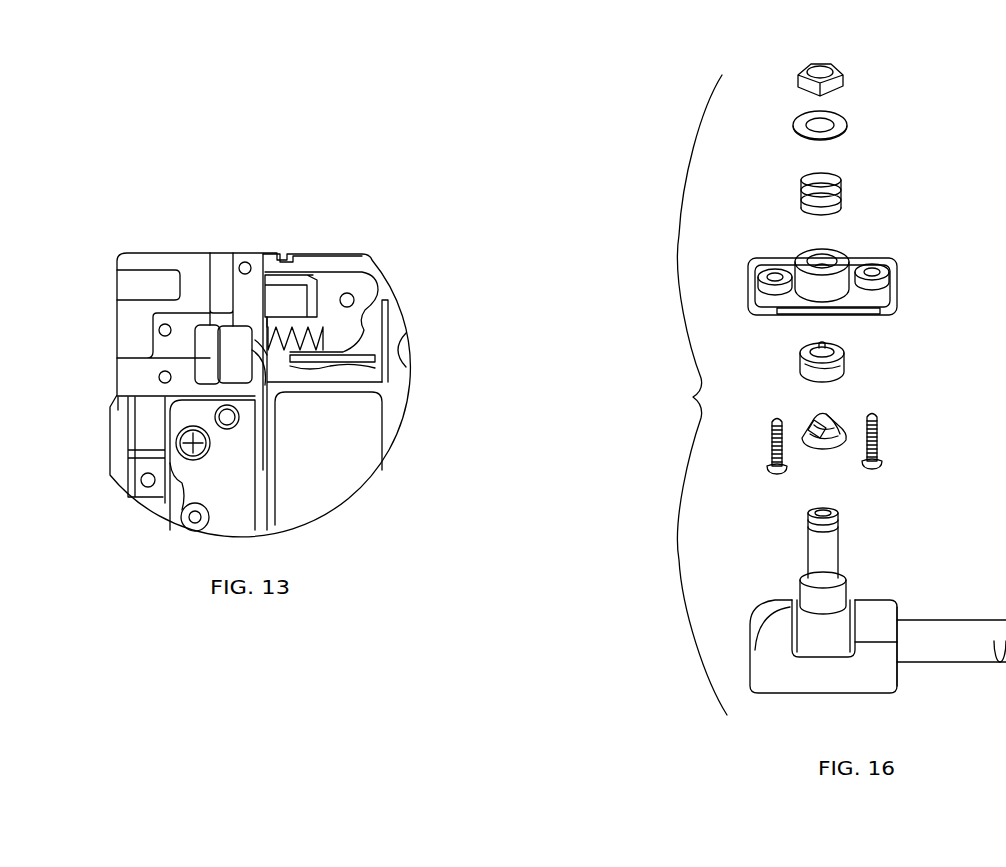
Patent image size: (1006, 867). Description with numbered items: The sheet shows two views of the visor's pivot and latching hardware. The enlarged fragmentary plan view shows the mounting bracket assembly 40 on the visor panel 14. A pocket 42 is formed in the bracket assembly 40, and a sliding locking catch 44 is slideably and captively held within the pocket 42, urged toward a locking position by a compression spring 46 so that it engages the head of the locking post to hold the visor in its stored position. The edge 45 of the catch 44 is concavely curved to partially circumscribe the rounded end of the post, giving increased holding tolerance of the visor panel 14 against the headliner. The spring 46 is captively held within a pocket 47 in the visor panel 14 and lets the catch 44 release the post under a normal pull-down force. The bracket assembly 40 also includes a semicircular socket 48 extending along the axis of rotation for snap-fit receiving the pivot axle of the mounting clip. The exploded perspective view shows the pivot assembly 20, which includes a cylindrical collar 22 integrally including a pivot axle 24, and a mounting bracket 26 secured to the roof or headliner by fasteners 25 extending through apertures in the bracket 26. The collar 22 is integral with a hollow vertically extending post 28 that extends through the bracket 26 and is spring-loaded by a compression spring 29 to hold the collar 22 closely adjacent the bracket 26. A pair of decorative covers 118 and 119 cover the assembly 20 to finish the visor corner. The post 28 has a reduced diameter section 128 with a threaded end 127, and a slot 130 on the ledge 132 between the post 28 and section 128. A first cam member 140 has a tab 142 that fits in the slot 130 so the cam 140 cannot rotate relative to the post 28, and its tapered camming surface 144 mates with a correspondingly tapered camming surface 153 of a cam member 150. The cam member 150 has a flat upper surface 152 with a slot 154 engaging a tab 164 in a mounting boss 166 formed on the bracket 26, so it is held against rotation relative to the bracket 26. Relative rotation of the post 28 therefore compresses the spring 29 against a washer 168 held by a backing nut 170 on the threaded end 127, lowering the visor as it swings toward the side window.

In FIG. 13, the mounting bracket assembly 40 is at (146, 252).
In FIG. 13, the pocket 42 is at (205, 340).
In FIG. 13, the sliding locking catch 44 is at (232, 338).
In FIG. 13, the edge of catch 45 is at (210, 358).
In FIG. 13, the compression spring 46 is at (295, 323).
In FIG. 13, the pocket 47 is at (130, 396).
In FIG. 13, the semicircular socket 48 is at (138, 297).
In FIG. 13, the visor panel 14 is at (337, 445).
In FIG. 16, the pivot assembly 20 is at (700, 395).
In FIG. 16, the cylindrical collar 22 is at (822, 640).
In FIG. 16, the pivot axle 24 is at (953, 622).
In FIG. 16, the fasteners 25 is at (770, 446).
In FIG. 16, the mounting bracket 26 is at (900, 288).
In FIG. 16, the hollow vertically extending post 28 is at (805, 600).
In FIG. 16, the compression spring 29 is at (833, 175).
In FIG. 16, the decorative cover 118 is at (797, 675).
In FIG. 16, the decorative cover 119 is at (907, 620).
In FIG. 16, the threaded end 127 is at (808, 533).
In FIG. 16, the reduced diameter section 128 is at (837, 535).
In FIG. 16, the slot 130 is at (822, 573).
In FIG. 16, the ledge 132 is at (845, 587).
In FIG. 16, the first cam member 140 is at (830, 416).
In FIG. 16, the tab 142 is at (808, 430).
In FIG. 16, the tapered camming surface 144 is at (840, 425).
In FIG. 16, the cam member 150 is at (796, 364).
In FIG. 16, the flat upper surface 152 is at (843, 350).
In FIG. 16, the tapered camming surface 153 is at (840, 368).
In FIG. 16, the slot 154 is at (824, 343).
In FIG. 16, the tab 164 is at (855, 233).
In FIG. 16, the mounting boss 166 is at (850, 262).
In FIG. 16, the washer 168 is at (838, 120).
In FIG. 16, the backing nut 170 is at (830, 66).